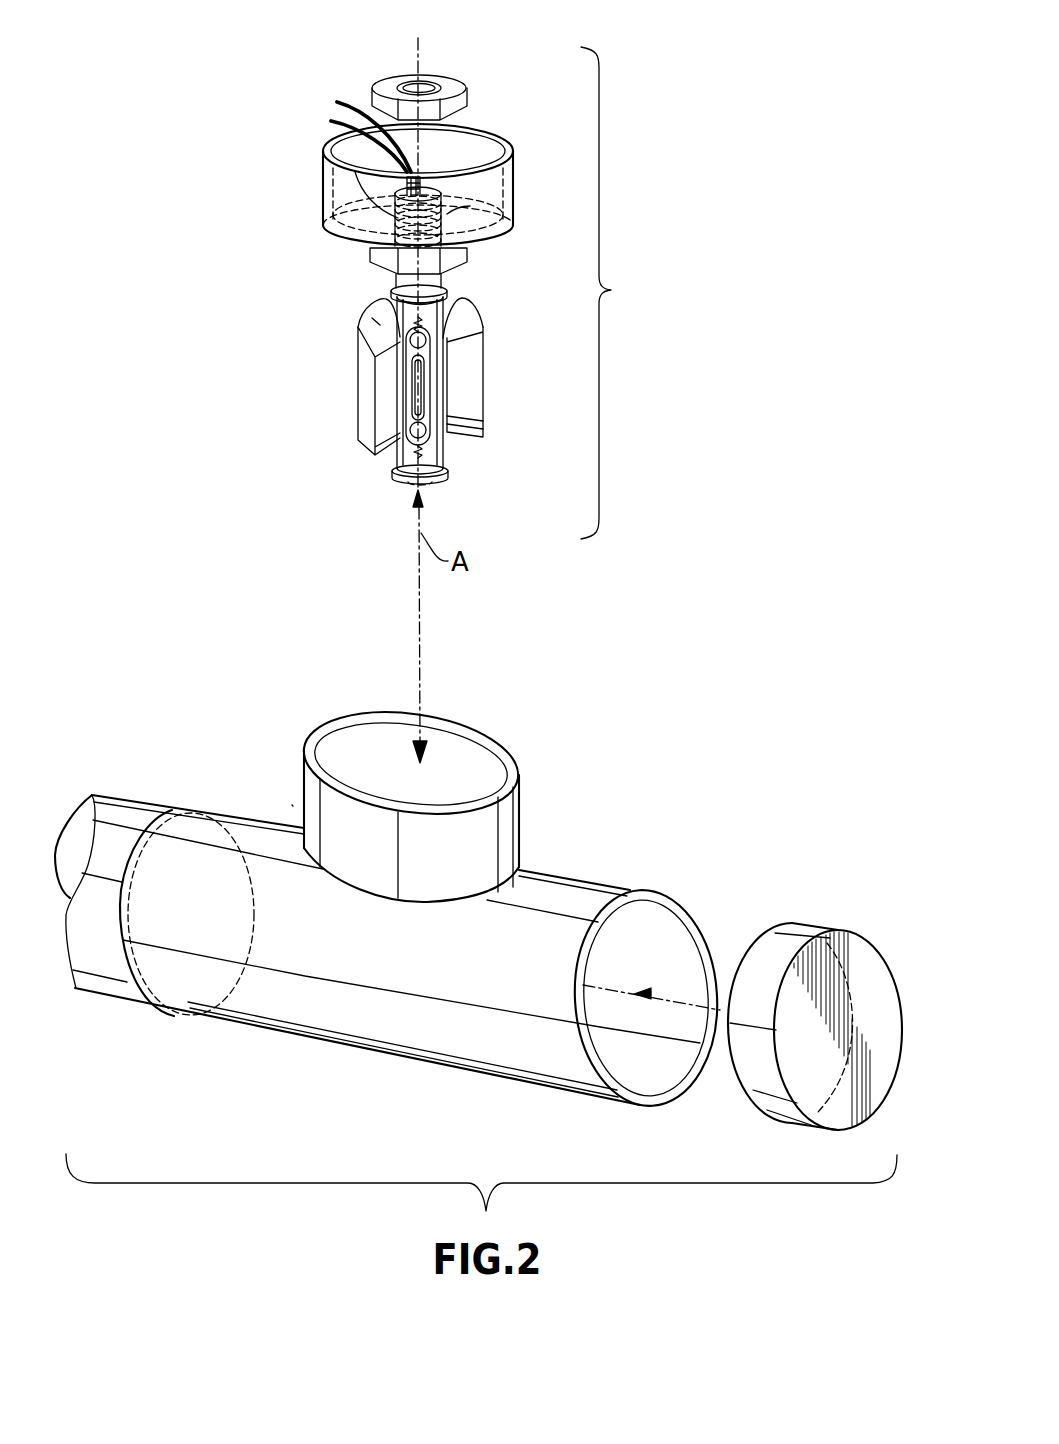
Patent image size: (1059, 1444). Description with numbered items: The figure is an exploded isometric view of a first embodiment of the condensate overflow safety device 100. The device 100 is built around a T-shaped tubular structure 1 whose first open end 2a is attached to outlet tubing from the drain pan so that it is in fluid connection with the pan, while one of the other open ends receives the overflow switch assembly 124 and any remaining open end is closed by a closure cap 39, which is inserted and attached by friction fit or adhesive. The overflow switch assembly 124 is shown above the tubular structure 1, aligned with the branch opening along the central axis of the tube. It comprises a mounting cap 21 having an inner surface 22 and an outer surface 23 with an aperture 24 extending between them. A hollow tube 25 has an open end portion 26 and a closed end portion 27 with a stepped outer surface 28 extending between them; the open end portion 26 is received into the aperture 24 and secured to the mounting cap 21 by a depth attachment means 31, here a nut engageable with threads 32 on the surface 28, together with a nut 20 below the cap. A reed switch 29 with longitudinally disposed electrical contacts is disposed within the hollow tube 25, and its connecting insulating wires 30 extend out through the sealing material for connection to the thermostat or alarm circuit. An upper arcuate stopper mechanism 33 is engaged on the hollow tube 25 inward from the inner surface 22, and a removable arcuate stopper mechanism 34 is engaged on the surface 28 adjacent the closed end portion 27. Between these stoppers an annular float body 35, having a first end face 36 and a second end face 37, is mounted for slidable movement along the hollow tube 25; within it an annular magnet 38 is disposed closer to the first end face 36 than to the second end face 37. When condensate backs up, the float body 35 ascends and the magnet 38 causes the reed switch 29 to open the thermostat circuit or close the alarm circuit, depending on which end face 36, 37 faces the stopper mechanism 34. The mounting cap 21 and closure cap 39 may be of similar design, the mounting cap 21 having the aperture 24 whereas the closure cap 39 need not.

The T-shaped tubular structure 1 is at (547, 869).
The first open end 2a is at (186, 1012).
The lower hex nut 20 is at (382, 245).
The mounting cap 21 is at (455, 128).
The inner surface 22 is at (493, 239).
The outer surface 23 is at (505, 211).
The aperture 24 is at (368, 237).
The hollow tube 25 is at (445, 281).
The open end portion 26 is at (372, 325).
The closed end portion 27 is at (442, 458).
The stepped outer surface 28 is at (480, 344).
The reed switch 29 is at (424, 374).
The insulating wires 30 is at (336, 104).
The depth attachment means 31 is at (423, 77).
The threads 32 is at (335, 140).
The upper arcuate stopper mechanism 33 is at (445, 314).
The removable arcuate stopper mechanism 34 is at (447, 491).
The annular float body 35 is at (482, 369).
The first end face 36 is at (464, 424).
The second end face 37 is at (364, 329).
The annular magnet 38 is at (466, 437).
The closure cap 39 is at (805, 918).
The condensate overflow safety device 100 is at (274, 791).
The overflow switch assembly 124 is at (255, 231).